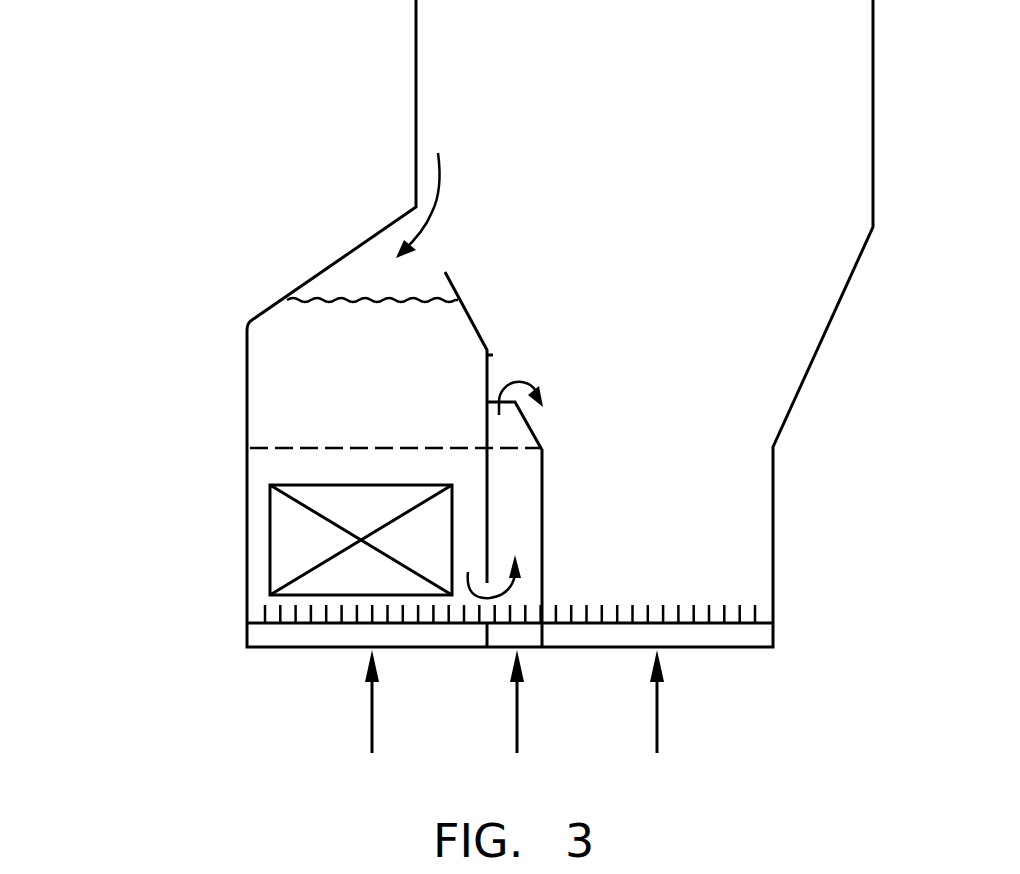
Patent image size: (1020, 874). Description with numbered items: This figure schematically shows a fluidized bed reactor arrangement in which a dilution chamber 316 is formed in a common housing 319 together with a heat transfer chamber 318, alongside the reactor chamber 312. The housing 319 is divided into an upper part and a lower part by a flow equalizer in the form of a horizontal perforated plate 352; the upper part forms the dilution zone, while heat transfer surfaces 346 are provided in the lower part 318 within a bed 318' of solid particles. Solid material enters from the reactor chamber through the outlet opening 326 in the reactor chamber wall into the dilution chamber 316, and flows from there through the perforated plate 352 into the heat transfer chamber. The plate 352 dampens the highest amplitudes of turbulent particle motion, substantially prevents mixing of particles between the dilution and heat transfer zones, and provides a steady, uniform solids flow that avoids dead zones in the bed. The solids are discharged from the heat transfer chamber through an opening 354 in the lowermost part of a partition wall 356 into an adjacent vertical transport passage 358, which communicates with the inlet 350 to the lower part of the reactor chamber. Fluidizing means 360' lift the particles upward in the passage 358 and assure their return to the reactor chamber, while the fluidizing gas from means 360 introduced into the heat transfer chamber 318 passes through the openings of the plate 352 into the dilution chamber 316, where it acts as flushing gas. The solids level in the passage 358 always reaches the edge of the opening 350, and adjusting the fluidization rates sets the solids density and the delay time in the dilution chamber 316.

The combustor housing / furnace enclosure 312 is at (678, 117).
The reactor chamber outlet opening 326 is at (445, 240).
The inlet 350 is at (497, 373).
The dilution chamber 316 is at (370, 383).
The partition wall 356 is at (495, 505).
The vertical transport passage 358 is at (527, 551).
The perforated plate 352 is at (297, 447).
The heat transfer chamber 318 is at (368, 466).
The heat transfer surfaces 346 is at (297, 488).
The bed of solid particles 318' is at (282, 625).
The common housing 319 is at (218, 465).
The opening 354 is at (497, 603).
The fluidizing means 360 is at (311, 688).
The fluidizing means 360' is at (587, 698).